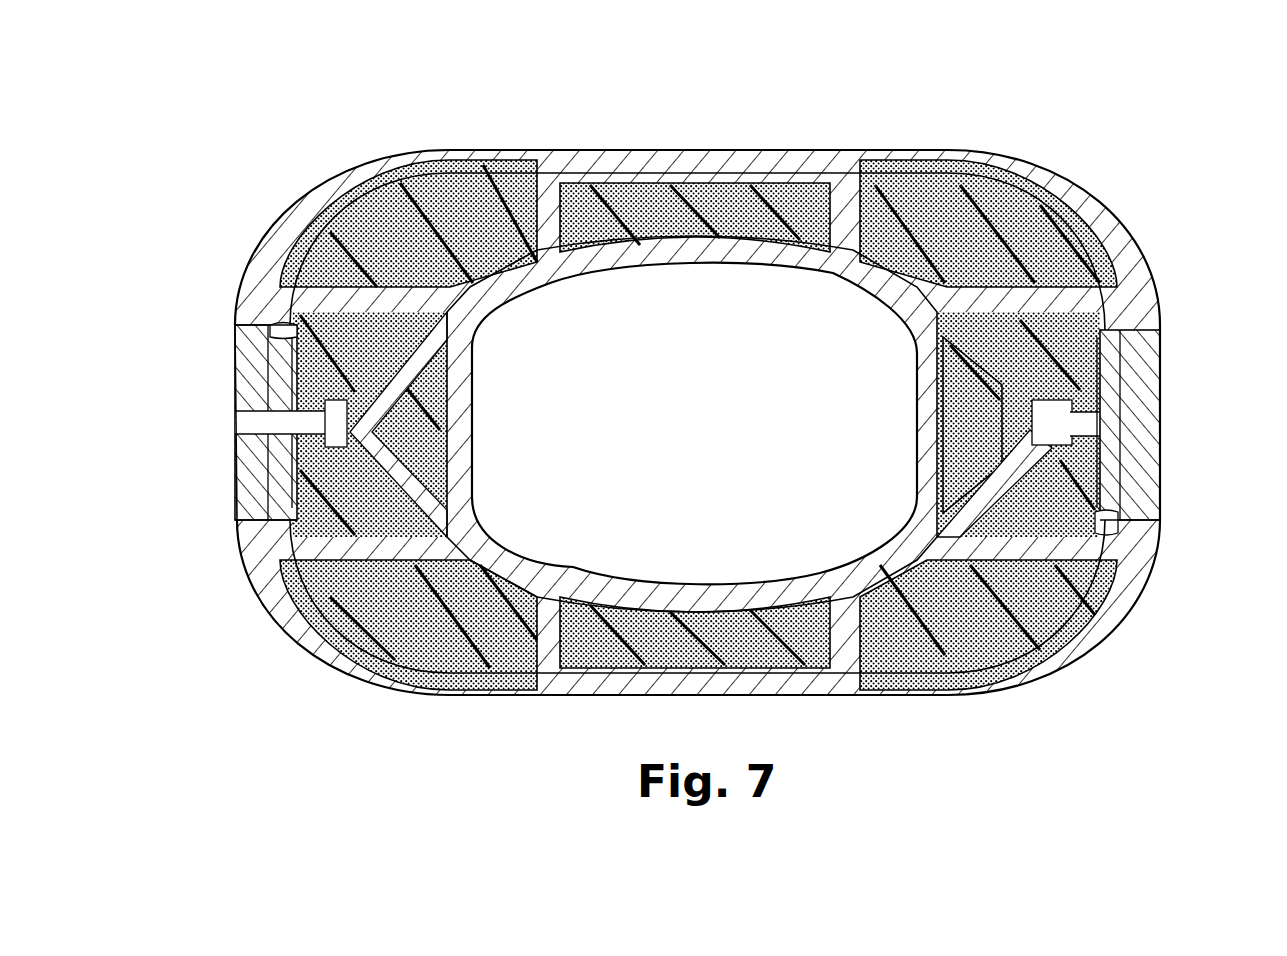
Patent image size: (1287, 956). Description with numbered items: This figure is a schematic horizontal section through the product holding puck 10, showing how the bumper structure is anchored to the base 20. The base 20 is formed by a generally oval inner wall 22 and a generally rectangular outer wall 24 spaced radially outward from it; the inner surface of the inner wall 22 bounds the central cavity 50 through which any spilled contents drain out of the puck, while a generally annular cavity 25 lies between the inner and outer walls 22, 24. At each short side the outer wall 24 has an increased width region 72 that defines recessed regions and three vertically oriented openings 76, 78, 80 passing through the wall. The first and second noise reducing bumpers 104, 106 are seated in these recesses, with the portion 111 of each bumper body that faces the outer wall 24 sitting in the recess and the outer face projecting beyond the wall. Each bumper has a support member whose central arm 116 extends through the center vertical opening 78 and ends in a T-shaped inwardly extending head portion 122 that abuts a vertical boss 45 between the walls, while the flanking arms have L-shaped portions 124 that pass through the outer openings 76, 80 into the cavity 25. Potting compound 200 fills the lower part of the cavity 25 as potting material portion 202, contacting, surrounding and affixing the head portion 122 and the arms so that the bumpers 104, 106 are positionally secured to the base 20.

The product holding puck 10 is at (1083, 113).
The base 20 is at (1110, 184).
The inner wall 22 is at (680, 602).
The outer wall 24 is at (607, 677).
The annular cavity 25 is at (937, 605).
The vertical boss 45 is at (358, 420).
The central cavity 50 is at (700, 445).
The increased width region 72 is at (283, 478).
The vertical opening 76 is at (253, 435).
The center vertical opening 78 is at (277, 330).
The vertical opening 80 is at (240, 527).
The first noise reducing bumper 104 is at (1172, 443).
The second noise reducing bumper 106 is at (232, 369).
The portion of the body 111 is at (235, 320).
The central arm 116 is at (272, 421).
The T-shaped head portion 122 is at (392, 442).
The L-shaped portion 124 is at (287, 312).
The potting compound 200 is at (263, 330).
The potting material portion 202 is at (340, 518).